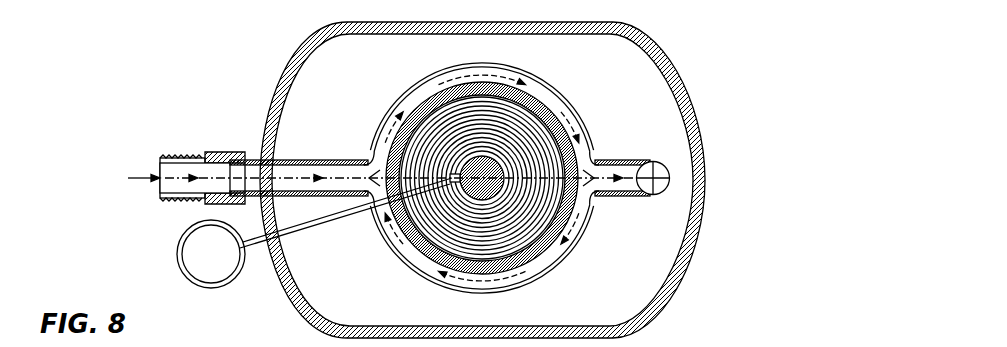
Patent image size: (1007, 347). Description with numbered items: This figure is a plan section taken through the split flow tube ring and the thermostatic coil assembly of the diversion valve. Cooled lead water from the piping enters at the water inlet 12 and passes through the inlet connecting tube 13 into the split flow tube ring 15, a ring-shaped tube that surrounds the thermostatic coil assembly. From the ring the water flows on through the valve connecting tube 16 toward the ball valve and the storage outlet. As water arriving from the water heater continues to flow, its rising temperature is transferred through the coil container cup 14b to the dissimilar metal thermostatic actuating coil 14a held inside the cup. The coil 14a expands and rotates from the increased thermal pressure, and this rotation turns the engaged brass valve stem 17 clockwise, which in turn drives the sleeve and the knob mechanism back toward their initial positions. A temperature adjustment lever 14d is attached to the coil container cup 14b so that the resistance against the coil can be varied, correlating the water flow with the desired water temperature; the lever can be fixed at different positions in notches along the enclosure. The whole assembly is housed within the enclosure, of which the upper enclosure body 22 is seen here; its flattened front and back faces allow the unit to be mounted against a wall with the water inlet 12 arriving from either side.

The water inlet 12 is at (385, 181).
The inlet connecting tube 13 is at (303, 160).
The thermostatic actuating coil 14a is at (405, 153).
The coil container cup 14b is at (408, 113).
The temperature adjustment lever 14d is at (175, 243).
The split flow tube ring 15 is at (403, 85).
The valve connecting tube 16 is at (647, 157).
The brass valve stem 17 is at (460, 203).
The upper enclosure body 22 is at (668, 53).